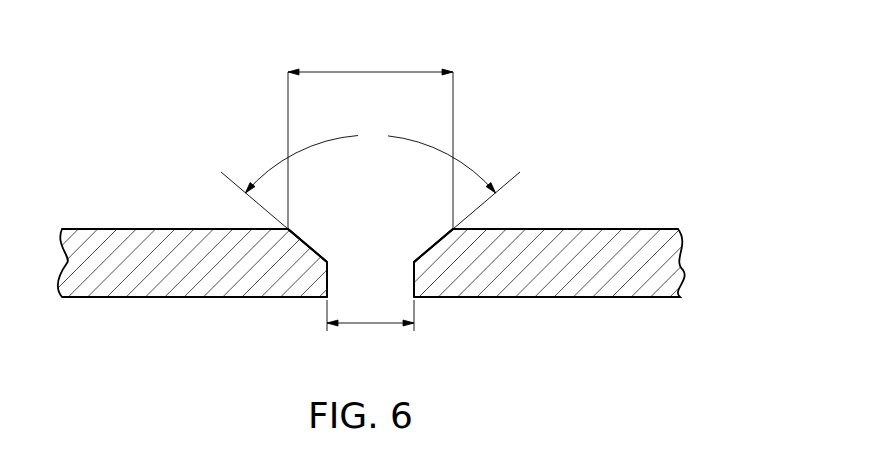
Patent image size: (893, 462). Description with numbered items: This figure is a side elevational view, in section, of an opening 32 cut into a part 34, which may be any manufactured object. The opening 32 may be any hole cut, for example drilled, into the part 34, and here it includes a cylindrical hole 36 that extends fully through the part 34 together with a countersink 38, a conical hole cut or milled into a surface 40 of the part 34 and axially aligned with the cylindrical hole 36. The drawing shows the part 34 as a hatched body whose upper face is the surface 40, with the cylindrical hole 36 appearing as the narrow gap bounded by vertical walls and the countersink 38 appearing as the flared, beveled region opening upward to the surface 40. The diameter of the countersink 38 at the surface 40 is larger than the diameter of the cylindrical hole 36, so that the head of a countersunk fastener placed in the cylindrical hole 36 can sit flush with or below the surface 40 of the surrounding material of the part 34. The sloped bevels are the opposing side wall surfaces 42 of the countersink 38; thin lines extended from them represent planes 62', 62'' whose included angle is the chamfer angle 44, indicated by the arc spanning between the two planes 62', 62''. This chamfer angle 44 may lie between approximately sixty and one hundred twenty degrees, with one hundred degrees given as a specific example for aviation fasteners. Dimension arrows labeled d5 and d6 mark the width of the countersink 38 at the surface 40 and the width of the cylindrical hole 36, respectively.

The part 34 is at (118, 229).
The surface 40 is at (187, 229).
The countersink 38 is at (297, 238).
The side wall surfaces 42 is at (305, 243).
The cylindrical hole 36 is at (327, 277).
The opening 32 is at (352, 293).
The chamfer angle 44 is at (402, 138).
The plane 62' is at (226, 193).
The plane 62'' is at (518, 194).
The groove width dimension d5 is at (371, 72).
The root opening dimension d6 is at (369, 325).